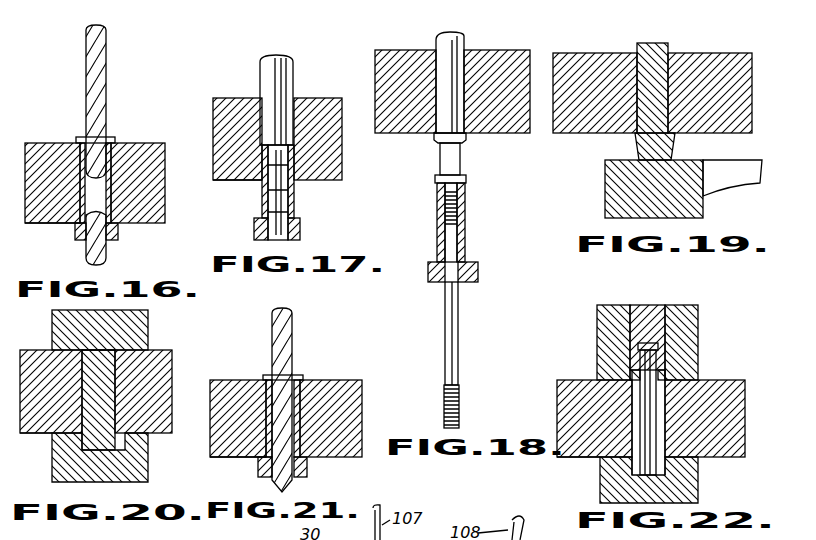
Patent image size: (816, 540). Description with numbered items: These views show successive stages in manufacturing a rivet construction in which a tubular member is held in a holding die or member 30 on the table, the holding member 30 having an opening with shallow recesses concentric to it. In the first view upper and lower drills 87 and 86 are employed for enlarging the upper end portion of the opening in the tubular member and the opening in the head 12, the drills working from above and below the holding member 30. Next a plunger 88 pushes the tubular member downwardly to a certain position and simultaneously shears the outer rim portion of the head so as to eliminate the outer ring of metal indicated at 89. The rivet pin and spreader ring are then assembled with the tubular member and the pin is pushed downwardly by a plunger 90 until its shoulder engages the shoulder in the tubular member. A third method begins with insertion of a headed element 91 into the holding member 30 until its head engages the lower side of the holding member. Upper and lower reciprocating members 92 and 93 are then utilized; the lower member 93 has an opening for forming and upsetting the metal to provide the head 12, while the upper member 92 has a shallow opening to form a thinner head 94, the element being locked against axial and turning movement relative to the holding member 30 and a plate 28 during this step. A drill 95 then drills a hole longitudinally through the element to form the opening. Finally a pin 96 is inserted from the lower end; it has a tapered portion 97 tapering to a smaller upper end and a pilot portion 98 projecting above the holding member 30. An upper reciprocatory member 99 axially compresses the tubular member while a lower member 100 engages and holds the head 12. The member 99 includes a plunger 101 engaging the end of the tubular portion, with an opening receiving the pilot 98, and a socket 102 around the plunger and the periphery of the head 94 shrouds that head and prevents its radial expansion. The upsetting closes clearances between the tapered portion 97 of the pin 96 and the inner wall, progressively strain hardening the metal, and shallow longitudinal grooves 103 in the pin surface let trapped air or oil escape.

In FIG. 16, the head 12 is at (76, 232).
In FIG. 17, the head 12 is at (256, 226).
In FIG. 20, the head 12 is at (80, 445).
In FIG. 21, the head 12 is at (260, 462).
In FIG. 22, the head 12 is at (628, 464).
In FIG. 20, the plate 28 is at (162, 368).
In FIG. 16, the holding die or member 30 is at (150, 144).
In FIG. 17, the holding die or member 30 is at (314, 100).
In FIG. 18, the holding die or member 30 is at (510, 50).
In FIG. 19, the holding die or member 30 is at (712, 56).
In FIG. 21, the holding die or member 30 is at (328, 380).
In FIG. 22, the holding die or member 30 is at (730, 422).
In FIG. 16, the lower drill 86 is at (108, 262).
In FIG. 16, the upper drill 87 is at (100, 46).
In FIG. 17, the plunger 88 is at (288, 60).
In FIG. 17, the outer ring of metal 89 is at (294, 86).
In FIG. 18, the plunger 90 is at (463, 48).
In FIG. 19, the element 91 is at (665, 52).
In FIG. 20, the element 91 is at (105, 394).
In FIG. 20, the upper reciprocating member 92 is at (148, 322).
In FIG. 20, the lower reciprocating member 93 is at (150, 462).
In FIG. 20, the thinner head 94 is at (116, 352).
In FIG. 21, the drill 95 is at (292, 334).
In FIG. 22, the pin 96 is at (652, 420).
In FIG. 22, the tapered portion 97 is at (656, 396).
In FIG. 22, the pilot portion 98 is at (630, 368).
In FIG. 22, the upper reciprocatory member 99 is at (690, 320).
In FIG. 22, the lower member 100 is at (605, 483).
In FIG. 22, the plunger 101 is at (660, 340).
In FIG. 22, the socket 102 is at (666, 372).
In FIG. 22, the shallow longitudinal grooves 103 is at (640, 388).